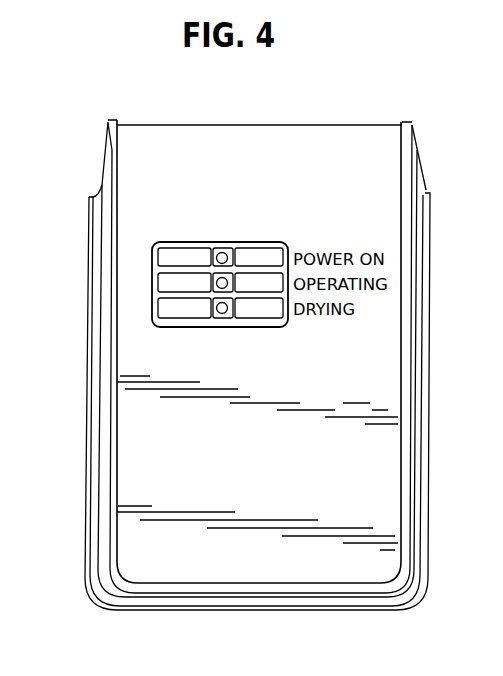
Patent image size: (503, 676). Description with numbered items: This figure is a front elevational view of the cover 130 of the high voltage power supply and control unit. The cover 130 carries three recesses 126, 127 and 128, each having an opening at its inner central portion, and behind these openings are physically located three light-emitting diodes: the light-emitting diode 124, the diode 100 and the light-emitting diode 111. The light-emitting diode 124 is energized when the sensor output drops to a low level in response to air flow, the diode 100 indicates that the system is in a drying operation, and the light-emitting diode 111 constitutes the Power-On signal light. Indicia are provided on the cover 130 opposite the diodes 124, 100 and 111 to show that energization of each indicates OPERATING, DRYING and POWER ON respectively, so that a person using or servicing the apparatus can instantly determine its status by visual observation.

The diode 100 is at (223, 314).
The light-emitting diode 111 is at (224, 252).
The light-emitting diode 124 is at (228, 282).
The recess 126 is at (166, 292).
The recess 127 is at (166, 319).
The recess 128 is at (166, 266).
The cover 130 is at (373, 386).